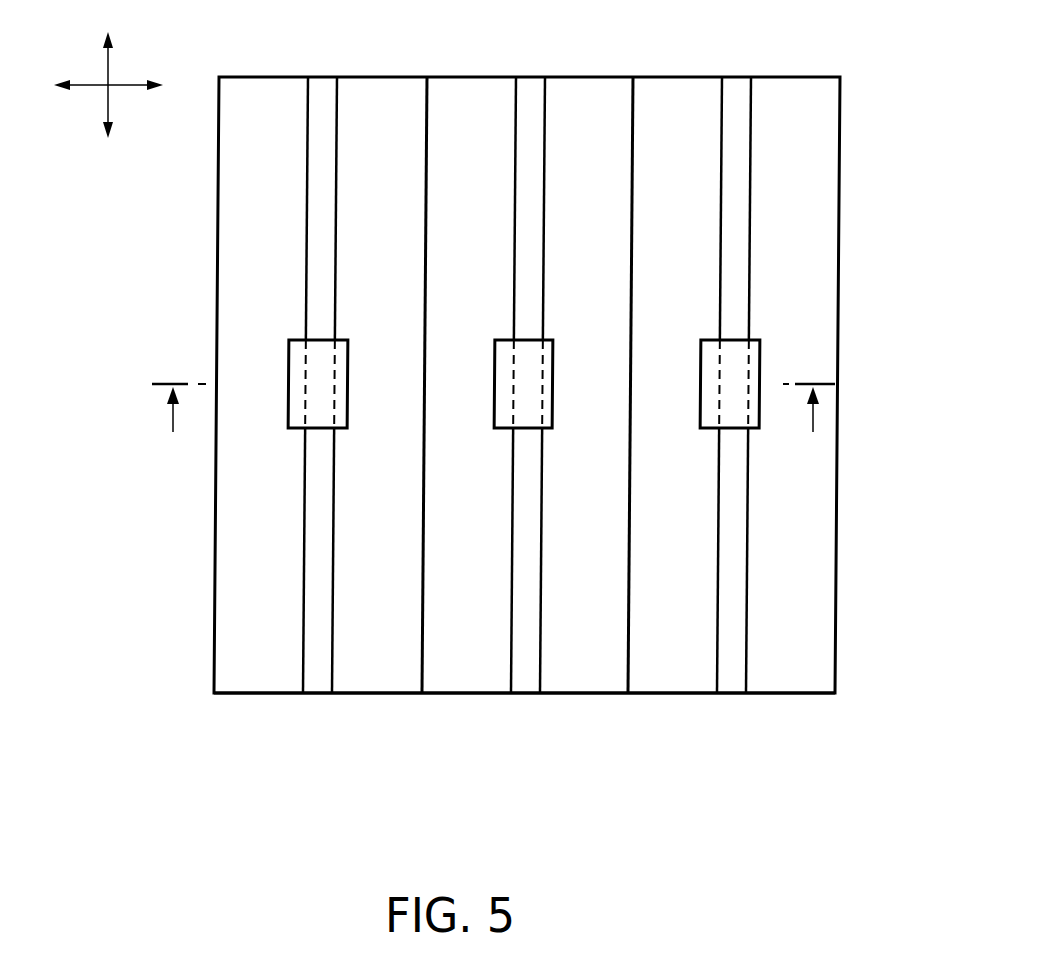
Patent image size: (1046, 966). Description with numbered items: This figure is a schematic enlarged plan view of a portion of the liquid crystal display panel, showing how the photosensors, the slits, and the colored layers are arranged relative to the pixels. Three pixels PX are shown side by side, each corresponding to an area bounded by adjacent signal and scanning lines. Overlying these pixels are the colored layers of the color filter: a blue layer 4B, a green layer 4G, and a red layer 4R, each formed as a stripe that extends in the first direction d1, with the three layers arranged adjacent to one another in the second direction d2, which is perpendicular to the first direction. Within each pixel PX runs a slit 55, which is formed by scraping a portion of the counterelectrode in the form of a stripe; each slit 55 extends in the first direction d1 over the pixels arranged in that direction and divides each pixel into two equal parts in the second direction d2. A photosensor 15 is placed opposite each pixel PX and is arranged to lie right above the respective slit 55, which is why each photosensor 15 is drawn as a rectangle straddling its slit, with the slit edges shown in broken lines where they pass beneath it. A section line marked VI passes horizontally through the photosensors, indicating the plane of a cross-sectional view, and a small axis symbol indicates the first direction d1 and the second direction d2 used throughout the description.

The slit 55 is at (337, 100).
The photosensor 15 is at (349, 391).
The blue layer 4B is at (378, 681).
The green layer 4G is at (582, 681).
The red layer 4R is at (785, 681).
The pixel PX is at (273, 710).
The section line VI- VI is at (173, 412).
The first direction d1 is at (106, 60).
The second direction d2 is at (92, 90).